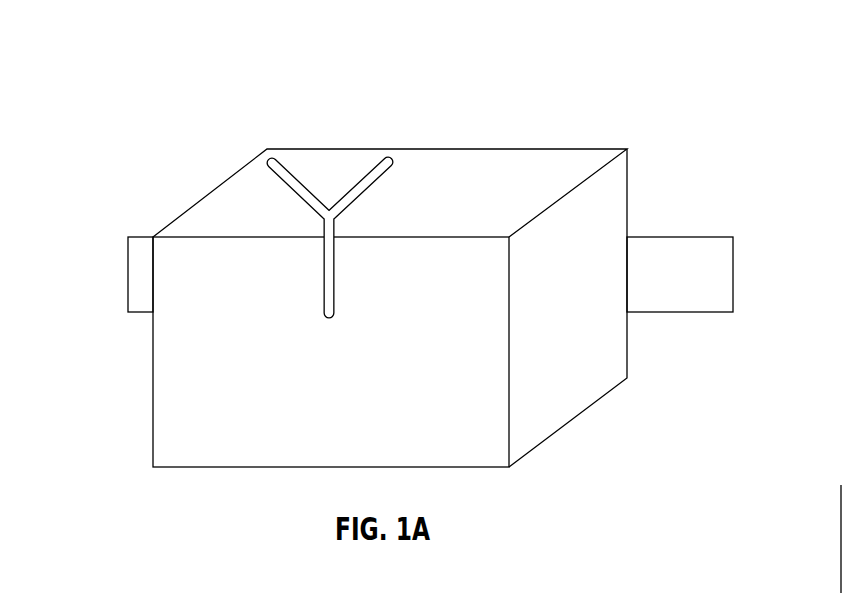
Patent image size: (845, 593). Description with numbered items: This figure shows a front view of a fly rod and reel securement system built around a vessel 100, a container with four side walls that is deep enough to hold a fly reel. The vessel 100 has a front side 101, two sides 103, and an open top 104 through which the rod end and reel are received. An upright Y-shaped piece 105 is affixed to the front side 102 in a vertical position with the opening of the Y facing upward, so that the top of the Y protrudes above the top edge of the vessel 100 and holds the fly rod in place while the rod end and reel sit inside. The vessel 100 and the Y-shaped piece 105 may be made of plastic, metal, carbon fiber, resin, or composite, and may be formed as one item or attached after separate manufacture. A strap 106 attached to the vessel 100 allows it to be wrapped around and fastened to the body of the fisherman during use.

The vessel 100 is at (182, 93).
The front side 101 is at (170, 422).
The front side 102 is at (410, 294).
The side 103 is at (573, 403).
The open top 104 is at (203, 218).
The Y-shaped piece 105 is at (266, 158).
The strap 106 is at (733, 268).